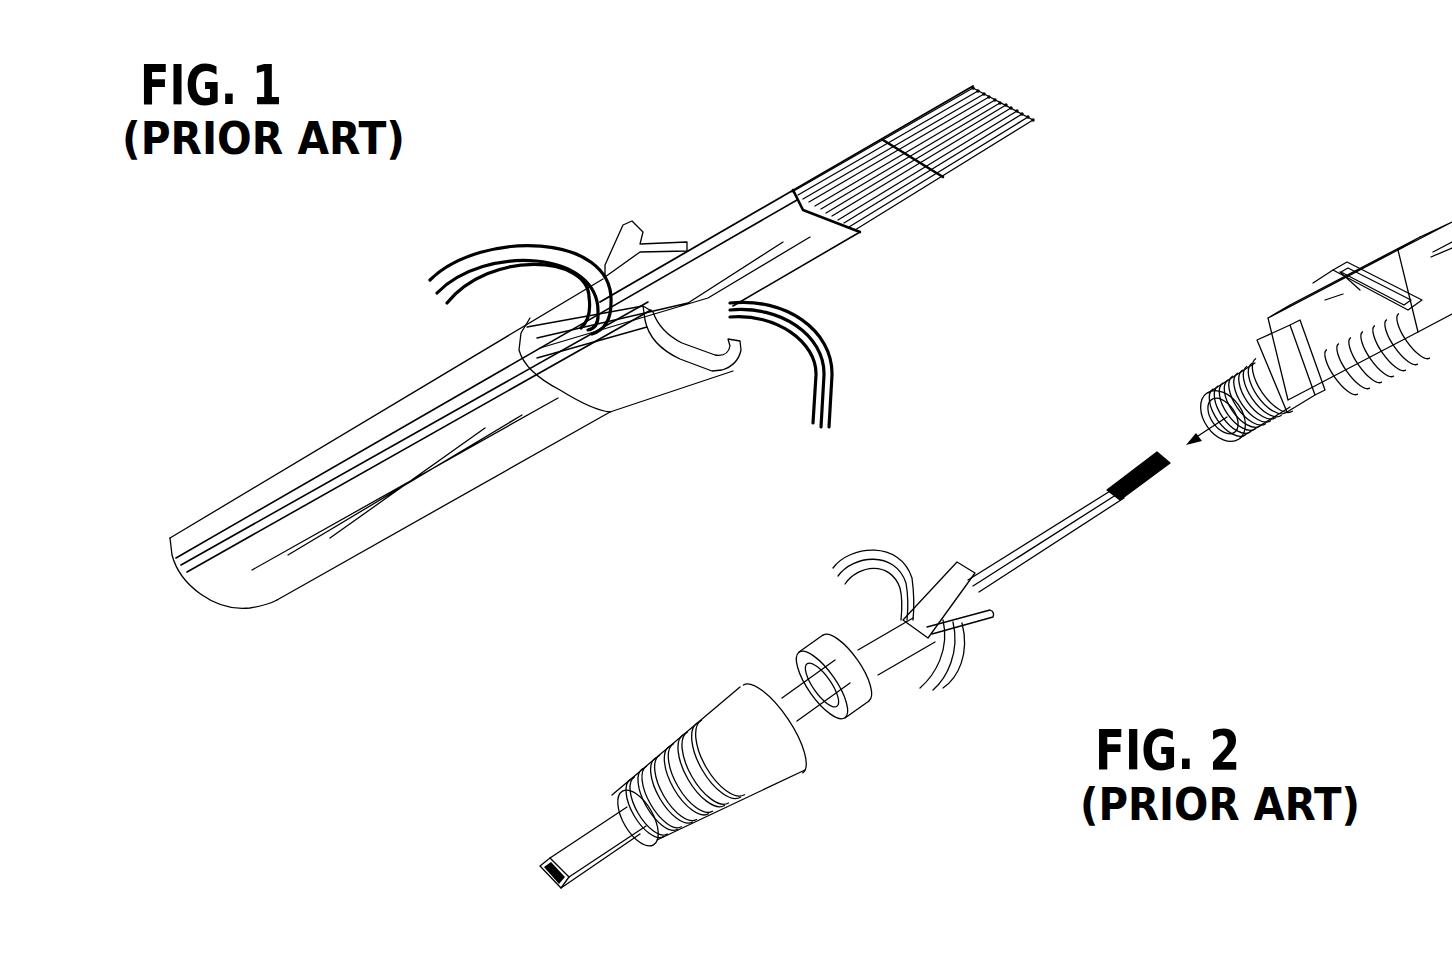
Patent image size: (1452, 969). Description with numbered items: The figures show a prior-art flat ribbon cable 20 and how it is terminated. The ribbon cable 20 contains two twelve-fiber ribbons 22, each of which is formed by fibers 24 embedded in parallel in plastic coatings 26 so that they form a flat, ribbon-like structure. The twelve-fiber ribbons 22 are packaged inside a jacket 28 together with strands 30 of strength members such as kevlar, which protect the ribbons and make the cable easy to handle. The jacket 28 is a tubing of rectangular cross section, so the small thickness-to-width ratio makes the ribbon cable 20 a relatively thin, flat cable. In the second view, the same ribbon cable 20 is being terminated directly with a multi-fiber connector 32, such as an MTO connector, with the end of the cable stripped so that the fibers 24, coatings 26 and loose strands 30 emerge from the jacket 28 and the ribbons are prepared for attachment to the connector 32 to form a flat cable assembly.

In FIG. 1, the ribbon cable 20 is at (582, 458).
In FIG. 2, the ribbon cable 20 is at (668, 683).
In FIG. 1, the 12-fiber ribbons 22 is at (997, 82).
In FIG. 2, the 12-fiber ribbons 22 is at (1178, 492).
In FIG. 1, the fibers 24 is at (937, 137).
In FIG. 2, the fibers 24 is at (1127, 480).
In FIG. 1, the coatings 26 is at (803, 207).
In FIG. 2, the coatings 26 is at (1113, 500).
In FIG. 1, the jacket 28 is at (497, 448).
In FIG. 2, the jacket 28 is at (888, 655).
In FIG. 1, the strands 30 is at (522, 242).
In FIG. 2, the strands 30 is at (883, 553).
In FIG. 2, the multi-fiber connector 32 is at (1325, 255).